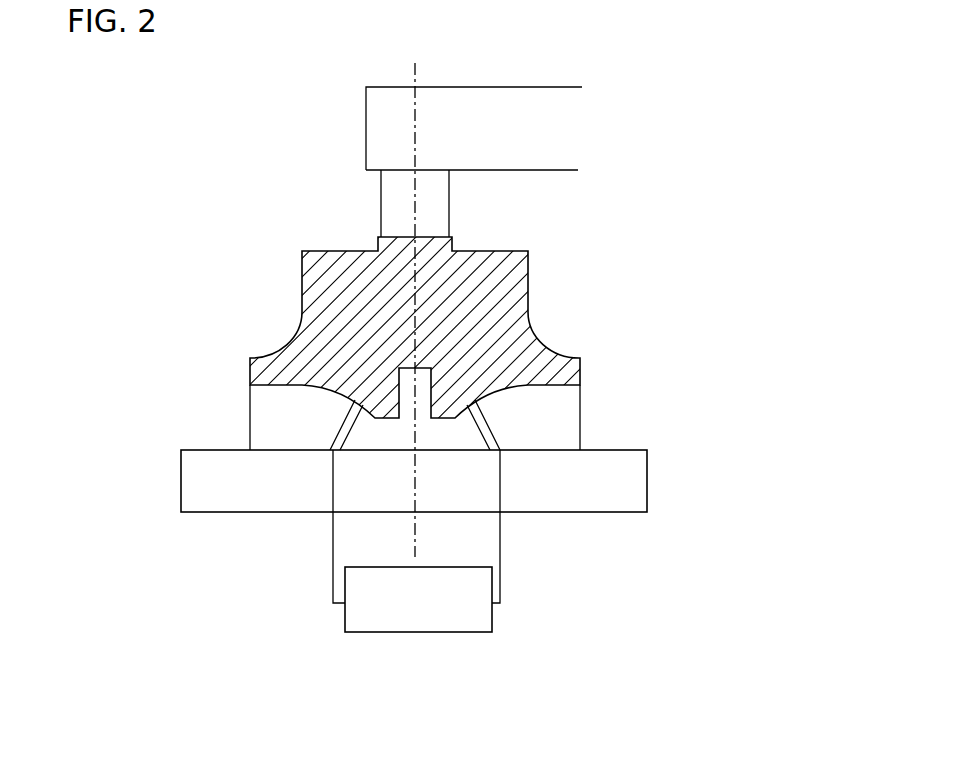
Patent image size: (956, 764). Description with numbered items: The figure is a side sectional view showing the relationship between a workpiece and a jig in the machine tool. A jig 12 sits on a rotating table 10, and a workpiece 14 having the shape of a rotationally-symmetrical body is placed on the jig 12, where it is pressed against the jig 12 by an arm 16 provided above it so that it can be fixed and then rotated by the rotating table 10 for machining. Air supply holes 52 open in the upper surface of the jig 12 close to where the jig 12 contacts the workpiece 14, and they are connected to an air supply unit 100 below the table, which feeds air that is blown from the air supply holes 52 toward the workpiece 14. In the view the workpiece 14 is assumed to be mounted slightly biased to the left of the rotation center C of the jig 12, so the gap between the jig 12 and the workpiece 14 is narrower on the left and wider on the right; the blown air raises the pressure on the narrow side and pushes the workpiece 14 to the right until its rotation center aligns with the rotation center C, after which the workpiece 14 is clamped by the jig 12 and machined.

The rotating table 10 is at (636, 478).
The jig 12 is at (560, 405).
The workpiece 14 is at (318, 282).
The arm 16 is at (476, 87).
The air supply holes 52 is at (348, 425).
The air supply unit 100 is at (492, 618).
The rotation center C is at (415, 203).